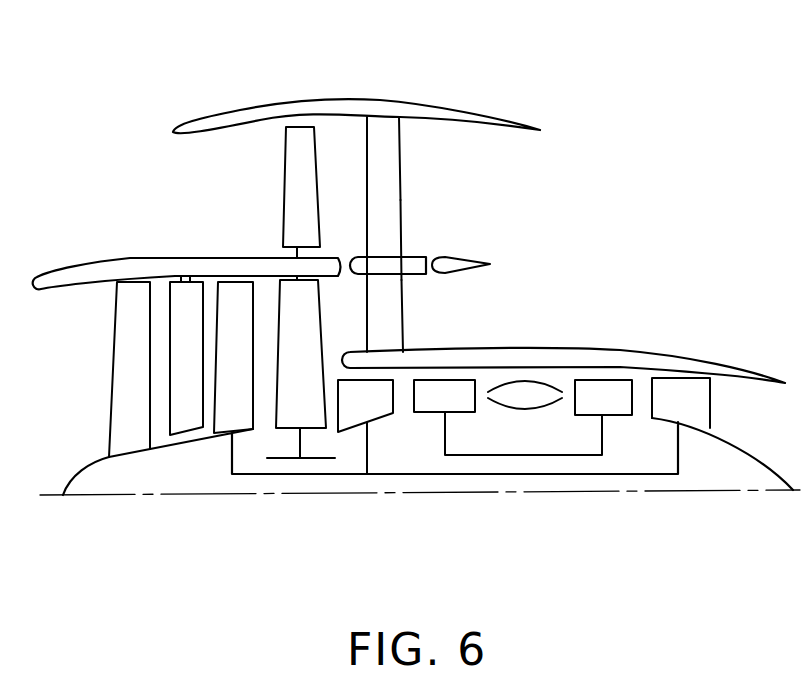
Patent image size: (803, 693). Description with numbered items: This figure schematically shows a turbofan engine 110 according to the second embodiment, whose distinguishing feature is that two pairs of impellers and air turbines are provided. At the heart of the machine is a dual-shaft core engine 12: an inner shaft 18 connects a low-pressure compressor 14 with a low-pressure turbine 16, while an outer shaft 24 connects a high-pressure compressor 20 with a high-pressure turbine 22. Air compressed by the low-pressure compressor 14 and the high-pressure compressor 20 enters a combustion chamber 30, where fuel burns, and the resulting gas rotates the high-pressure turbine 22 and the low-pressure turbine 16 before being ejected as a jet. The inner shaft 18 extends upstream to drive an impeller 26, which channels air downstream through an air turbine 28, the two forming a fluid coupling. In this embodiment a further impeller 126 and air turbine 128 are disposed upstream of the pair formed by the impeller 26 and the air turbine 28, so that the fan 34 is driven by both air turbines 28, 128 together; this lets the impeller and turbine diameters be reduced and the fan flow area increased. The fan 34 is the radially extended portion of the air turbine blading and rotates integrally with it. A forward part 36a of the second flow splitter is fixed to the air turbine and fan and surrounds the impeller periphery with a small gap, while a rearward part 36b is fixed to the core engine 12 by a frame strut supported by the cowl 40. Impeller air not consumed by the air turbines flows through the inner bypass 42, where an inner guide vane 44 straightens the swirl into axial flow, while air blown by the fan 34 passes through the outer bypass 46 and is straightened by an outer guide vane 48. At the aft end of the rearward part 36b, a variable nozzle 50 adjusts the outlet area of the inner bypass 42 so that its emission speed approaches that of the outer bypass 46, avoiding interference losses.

The turbofan engine 110 is at (633, 172).
The cowl 40 is at (395, 100).
The outer bypass 46 is at (448, 159).
The outer guide vane 48 is at (403, 172).
The inner guide vane 44 is at (403, 305).
The fan 34 is at (287, 178).
The forward part of the second flow splitter 36a is at (148, 258).
The rearward part of the second flow splitter 36b is at (416, 257).
The air turbine 128 is at (184, 258).
The impeller 26 is at (240, 288).
The impeller 126 is at (116, 352).
The air turbine 28 is at (312, 323).
The variable nozzle 50 is at (478, 261).
The inner bypass 42 is at (462, 345).
The core engine 12 is at (688, 348).
The low-pressure compressor 14 is at (379, 418).
The high-pressure compressor 20 is at (455, 412).
The combustion chamber 30 is at (540, 405).
The high-pressure turbine 22 is at (612, 415).
The low-pressure turbine 16 is at (712, 408).
The outer shaft 24 is at (513, 448).
The inner shaft 18 is at (593, 474).